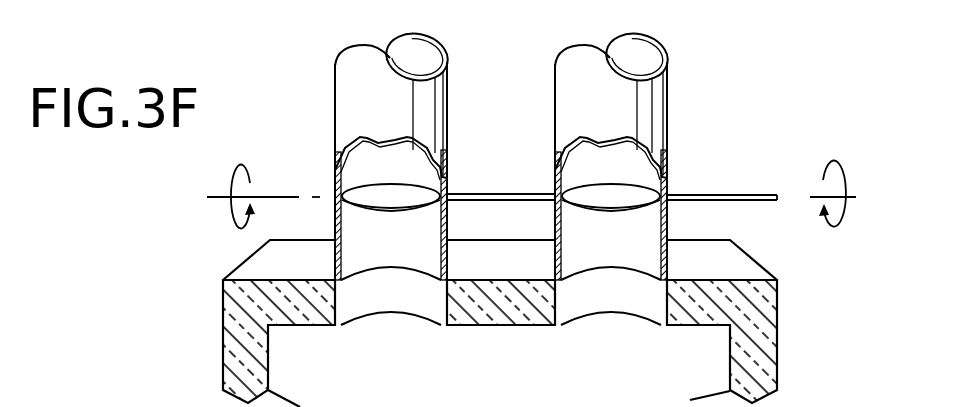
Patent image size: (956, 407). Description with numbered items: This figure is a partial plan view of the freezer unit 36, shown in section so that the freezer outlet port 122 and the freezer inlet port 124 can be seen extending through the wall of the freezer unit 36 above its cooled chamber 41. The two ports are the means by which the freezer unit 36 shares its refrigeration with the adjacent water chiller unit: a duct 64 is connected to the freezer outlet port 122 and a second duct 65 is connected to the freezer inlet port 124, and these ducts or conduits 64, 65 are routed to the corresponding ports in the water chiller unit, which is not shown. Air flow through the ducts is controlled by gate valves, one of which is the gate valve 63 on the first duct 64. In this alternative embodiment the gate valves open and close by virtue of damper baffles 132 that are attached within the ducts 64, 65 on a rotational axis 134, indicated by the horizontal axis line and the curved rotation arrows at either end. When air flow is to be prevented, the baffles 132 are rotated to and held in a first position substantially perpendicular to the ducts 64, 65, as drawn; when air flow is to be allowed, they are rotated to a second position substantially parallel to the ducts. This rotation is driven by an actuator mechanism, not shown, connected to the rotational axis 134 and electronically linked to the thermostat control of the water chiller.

The freezer unit 36 is at (212, 327).
The chamber 41 is at (511, 388).
The gate valve 63 is at (328, 190).
The duct 64 is at (366, 84).
The duct 65 is at (652, 96).
The freezer outlet port 122 is at (387, 284).
The freezer inlet port 124 is at (607, 284).
The damper baffle 132 is at (375, 192).
The rotational axis 134 is at (531, 153).